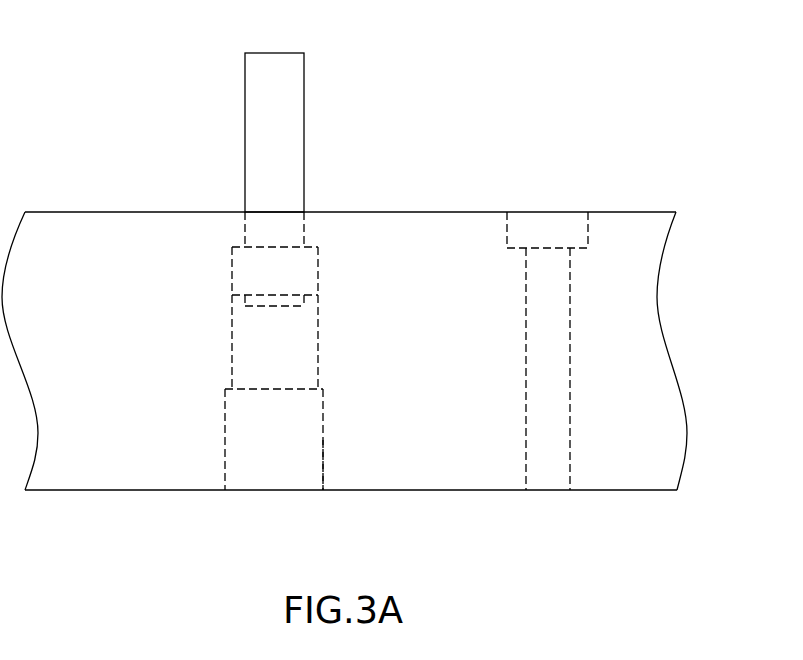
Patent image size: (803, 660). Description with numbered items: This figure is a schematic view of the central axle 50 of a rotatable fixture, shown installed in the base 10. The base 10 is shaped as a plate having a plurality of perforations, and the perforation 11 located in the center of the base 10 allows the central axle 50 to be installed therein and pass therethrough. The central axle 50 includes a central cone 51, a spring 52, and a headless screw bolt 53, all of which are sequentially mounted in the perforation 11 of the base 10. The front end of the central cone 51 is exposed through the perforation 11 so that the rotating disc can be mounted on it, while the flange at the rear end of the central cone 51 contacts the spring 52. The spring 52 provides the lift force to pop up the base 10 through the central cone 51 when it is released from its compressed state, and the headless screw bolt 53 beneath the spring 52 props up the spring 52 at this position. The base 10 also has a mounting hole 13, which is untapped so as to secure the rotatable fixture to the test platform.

The base 10 is at (680, 382).
The perforation 11 is at (323, 463).
The mounting hole 13 is at (570, 437).
The central axle 50 is at (330, 140).
The central cone 51 is at (295, 148).
The spring 52 is at (300, 340).
The headless screw bolt 53 is at (243, 415).